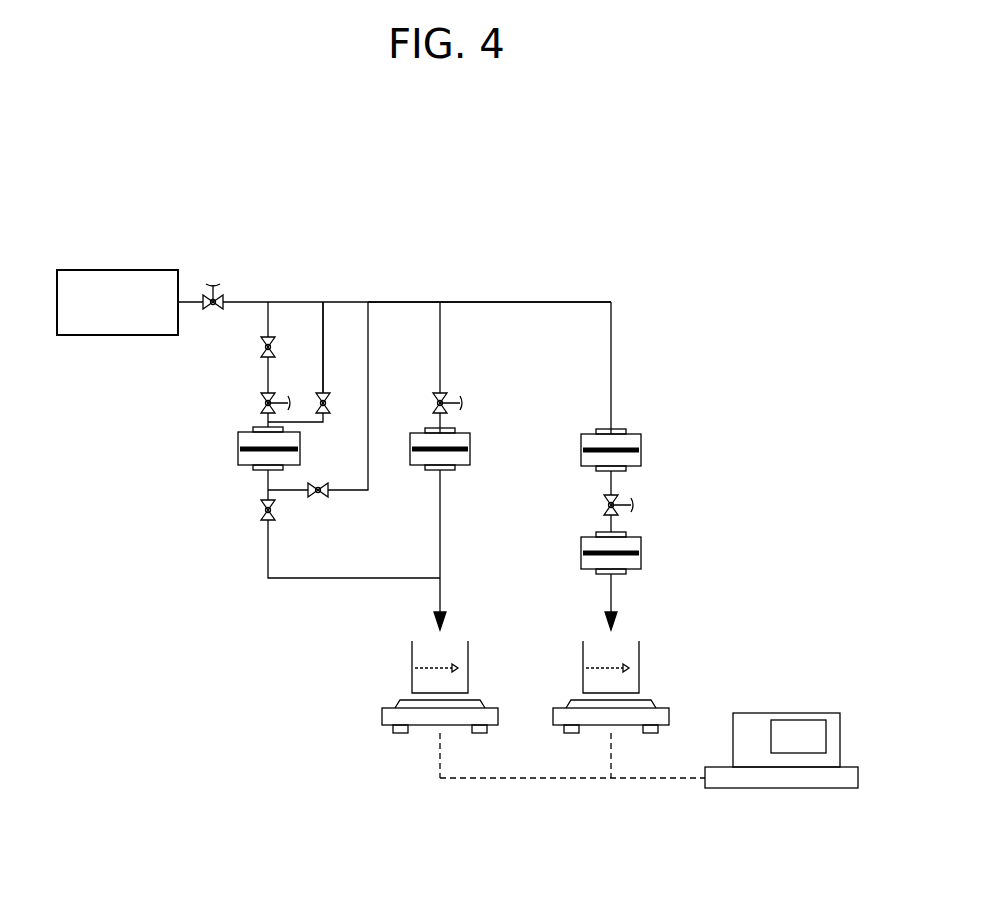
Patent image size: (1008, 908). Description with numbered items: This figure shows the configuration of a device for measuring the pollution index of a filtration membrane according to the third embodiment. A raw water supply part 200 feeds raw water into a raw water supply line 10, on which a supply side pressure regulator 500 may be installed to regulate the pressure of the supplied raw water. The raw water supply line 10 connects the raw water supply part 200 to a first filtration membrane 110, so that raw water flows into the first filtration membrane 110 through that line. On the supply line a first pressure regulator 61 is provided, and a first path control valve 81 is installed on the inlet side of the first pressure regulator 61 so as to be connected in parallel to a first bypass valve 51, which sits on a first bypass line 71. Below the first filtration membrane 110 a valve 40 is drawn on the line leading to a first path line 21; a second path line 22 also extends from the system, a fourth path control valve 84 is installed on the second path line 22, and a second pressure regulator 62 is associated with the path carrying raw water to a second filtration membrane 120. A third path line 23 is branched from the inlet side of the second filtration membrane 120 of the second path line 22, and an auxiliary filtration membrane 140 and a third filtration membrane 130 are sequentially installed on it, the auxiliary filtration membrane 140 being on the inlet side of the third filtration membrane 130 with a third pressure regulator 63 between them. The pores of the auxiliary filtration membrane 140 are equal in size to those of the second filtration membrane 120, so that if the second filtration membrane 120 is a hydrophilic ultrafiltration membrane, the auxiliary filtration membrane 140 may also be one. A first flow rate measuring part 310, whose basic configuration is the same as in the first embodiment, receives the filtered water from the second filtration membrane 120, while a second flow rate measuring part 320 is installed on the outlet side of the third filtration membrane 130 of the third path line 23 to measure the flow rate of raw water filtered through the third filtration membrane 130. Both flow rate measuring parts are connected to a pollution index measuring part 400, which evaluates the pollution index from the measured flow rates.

The raw water supply part 200 is at (105, 270).
The supply side pressure regulator 500 is at (213, 277).
The raw water supply line 10 is at (255, 300).
The first path control valve 81 is at (273, 335).
The first pressure regulator 61 is at (278, 392).
The first bypass line 71 is at (327, 300).
The first bypass valve 51 is at (327, 392).
The second path line 22 is at (422, 300).
The third path line 23 is at (548, 300).
The second pressure regulator 62 is at (447, 398).
The first filtration membrane 110 is at (238, 449).
The fourth path control valve 84 is at (322, 497).
The drain valve 40 is at (262, 511).
The first path line 21 is at (345, 578).
The second filtration membrane 120 is at (412, 466).
The auxiliary filtration membrane 140 is at (641, 450).
The third pressure regulator 63 is at (603, 502).
The third filtration membrane 130 is at (641, 553).
The first flow rate measuring part 310 is at (362, 724).
The second flow rate measuring part 320 is at (678, 690).
The pollution index measuring part 400 is at (790, 788).